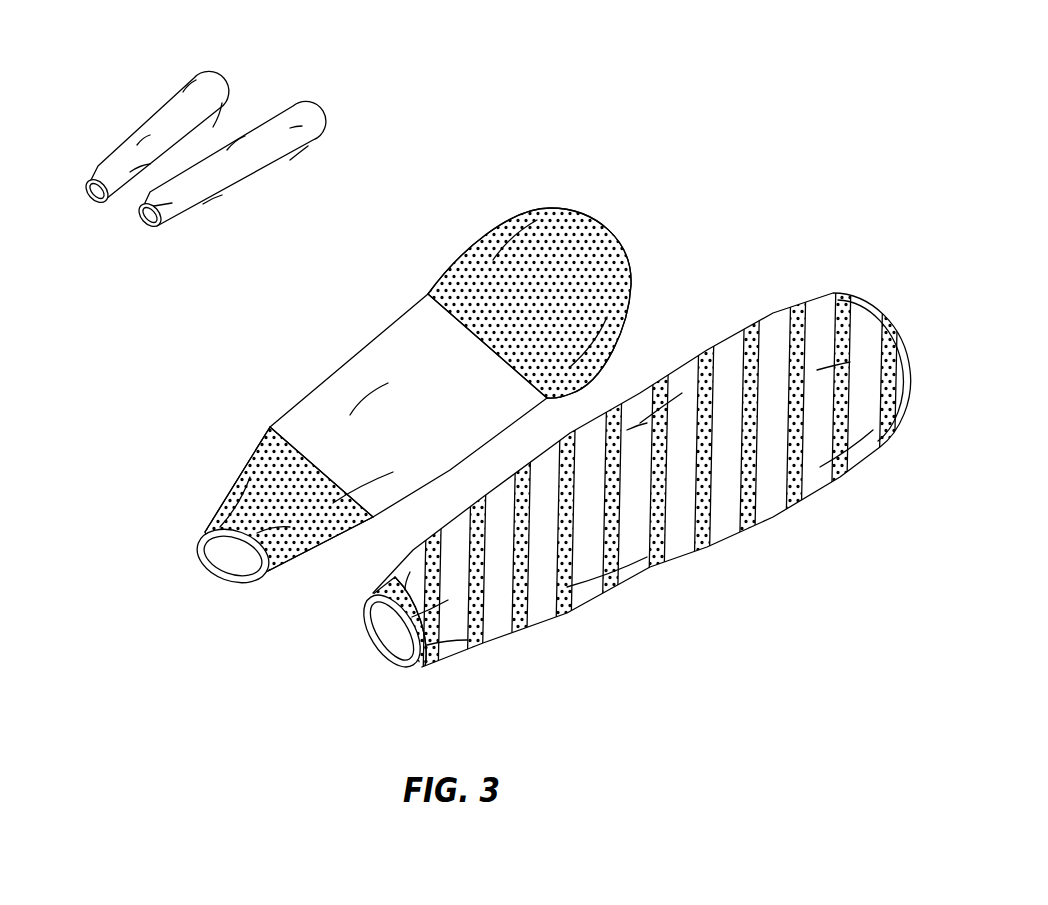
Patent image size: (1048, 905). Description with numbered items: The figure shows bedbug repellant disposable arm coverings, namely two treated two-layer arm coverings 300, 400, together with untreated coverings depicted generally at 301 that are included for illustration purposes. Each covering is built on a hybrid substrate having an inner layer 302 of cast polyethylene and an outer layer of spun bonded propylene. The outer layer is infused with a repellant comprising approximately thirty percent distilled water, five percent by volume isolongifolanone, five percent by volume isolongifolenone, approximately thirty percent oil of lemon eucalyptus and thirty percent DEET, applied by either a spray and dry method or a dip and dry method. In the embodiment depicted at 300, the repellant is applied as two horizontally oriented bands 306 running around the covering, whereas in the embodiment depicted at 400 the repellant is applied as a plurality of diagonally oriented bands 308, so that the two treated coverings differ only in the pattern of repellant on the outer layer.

The treated two-layer arm covering 300 is at (410, 366).
The untreated coverings 301 is at (146, 81).
The inner layer 302 is at (140, 222).
The horizontally oriented bands 306 is at (590, 260).
The diagonally oriented bands 308 is at (523, 630).
The treated two-layer arm covering 400 is at (692, 502).